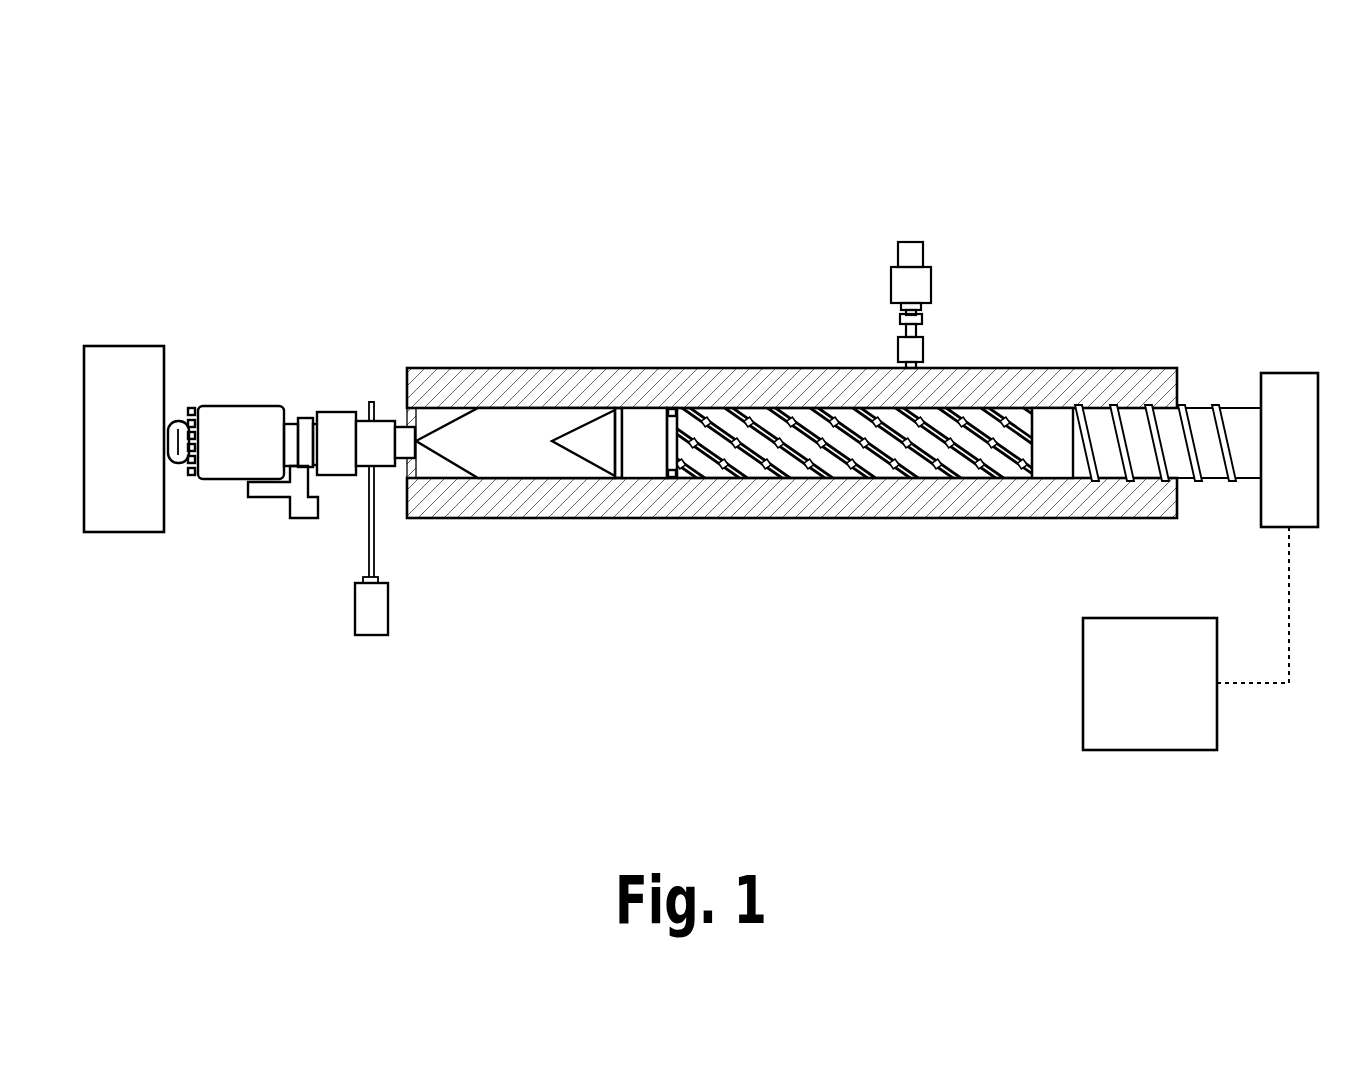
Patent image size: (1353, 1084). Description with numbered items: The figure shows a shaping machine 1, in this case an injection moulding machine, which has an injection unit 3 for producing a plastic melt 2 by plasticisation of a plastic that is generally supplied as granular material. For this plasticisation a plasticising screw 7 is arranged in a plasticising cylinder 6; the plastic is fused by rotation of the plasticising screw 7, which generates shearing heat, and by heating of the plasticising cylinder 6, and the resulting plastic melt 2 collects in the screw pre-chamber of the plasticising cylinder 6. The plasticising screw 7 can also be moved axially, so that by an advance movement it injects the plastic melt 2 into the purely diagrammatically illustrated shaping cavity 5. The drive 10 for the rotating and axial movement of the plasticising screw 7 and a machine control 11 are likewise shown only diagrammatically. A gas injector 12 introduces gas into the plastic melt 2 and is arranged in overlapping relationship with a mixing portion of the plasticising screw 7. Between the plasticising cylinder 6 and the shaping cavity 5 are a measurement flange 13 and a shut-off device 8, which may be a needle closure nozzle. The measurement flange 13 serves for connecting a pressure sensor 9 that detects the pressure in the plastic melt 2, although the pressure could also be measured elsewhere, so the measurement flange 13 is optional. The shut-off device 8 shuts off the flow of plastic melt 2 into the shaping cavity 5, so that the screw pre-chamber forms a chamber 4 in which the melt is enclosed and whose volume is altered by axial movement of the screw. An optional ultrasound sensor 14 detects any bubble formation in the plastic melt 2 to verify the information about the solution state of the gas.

The shaping machine 1 is at (192, 138).
The plastic melt 2 is at (515, 462).
The injection unit 3 is at (1102, 228).
The chamber 4 is at (517, 405).
The shaping cavity 5 is at (124, 439).
The plasticising cylinder 6 is at (800, 533).
The plasticising screw 7 is at (868, 452).
The shut-off device 8 is at (234, 497).
The pressure sensor 9 is at (370, 612).
The drive 10 is at (1289, 450).
The machine control 11 is at (1186, 638).
The gas injector 12 is at (928, 243).
The measurement flange 13 is at (339, 405).
The ultrasound sensor 14 is at (372, 400).